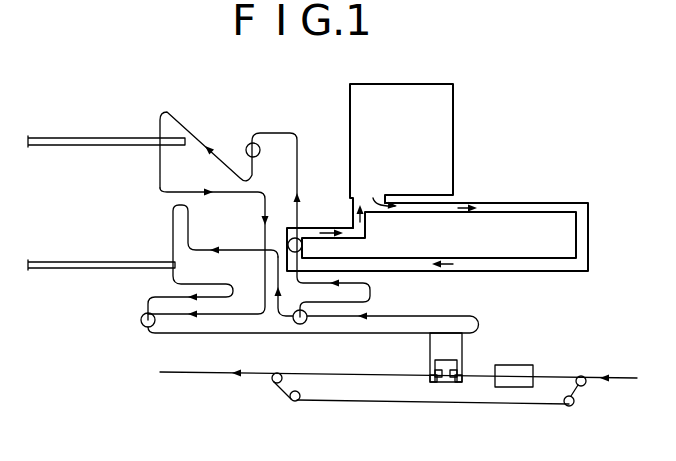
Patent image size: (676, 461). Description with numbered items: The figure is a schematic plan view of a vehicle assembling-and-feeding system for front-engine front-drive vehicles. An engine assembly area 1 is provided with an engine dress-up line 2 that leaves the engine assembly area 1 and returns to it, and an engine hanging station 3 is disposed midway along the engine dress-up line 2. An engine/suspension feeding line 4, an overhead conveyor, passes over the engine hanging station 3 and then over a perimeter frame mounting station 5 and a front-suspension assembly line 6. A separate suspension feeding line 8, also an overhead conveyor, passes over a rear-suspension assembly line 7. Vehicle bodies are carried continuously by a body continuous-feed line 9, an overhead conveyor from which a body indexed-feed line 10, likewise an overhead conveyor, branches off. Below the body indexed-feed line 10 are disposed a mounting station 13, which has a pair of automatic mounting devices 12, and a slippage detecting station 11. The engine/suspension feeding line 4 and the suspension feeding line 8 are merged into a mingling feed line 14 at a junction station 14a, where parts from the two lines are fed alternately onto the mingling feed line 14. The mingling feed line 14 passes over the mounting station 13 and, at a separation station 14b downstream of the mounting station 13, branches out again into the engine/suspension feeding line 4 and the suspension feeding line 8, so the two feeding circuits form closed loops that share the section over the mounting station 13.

The engine assembly area 1 is at (438, 145).
The engine dress-up line 2 is at (527, 203).
The engine hanging station 3 is at (300, 240).
The engine/suspension feeding line 4 is at (299, 142).
The perimeter frame mounting station 5 is at (247, 143).
The front-suspension assembly line 6 is at (77, 138).
The rear-suspension assembly line 7 is at (78, 262).
The suspension feeding line 8 is at (173, 213).
The body continuous-feed line 9 is at (622, 378).
The body indexed-feed line 10 is at (371, 404).
The slippage detecting station 11 is at (527, 365).
The automatic mounting devices 12 is at (453, 378).
The mounting station 13 is at (462, 353).
The mingling feed line 14 is at (240, 334).
The junction station 14a is at (141, 318).
The separation station 14b is at (308, 323).